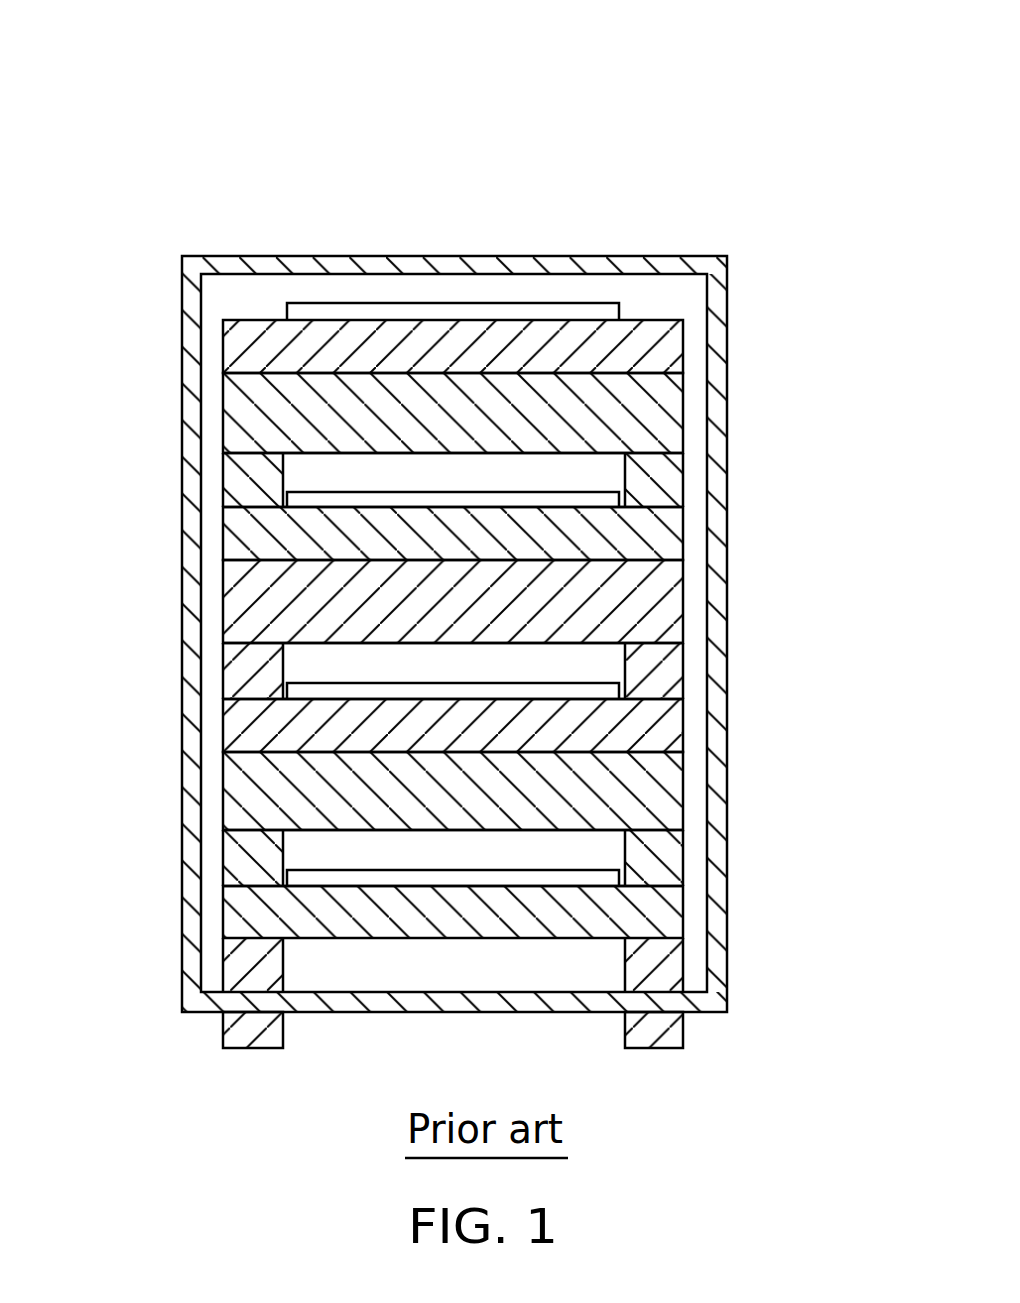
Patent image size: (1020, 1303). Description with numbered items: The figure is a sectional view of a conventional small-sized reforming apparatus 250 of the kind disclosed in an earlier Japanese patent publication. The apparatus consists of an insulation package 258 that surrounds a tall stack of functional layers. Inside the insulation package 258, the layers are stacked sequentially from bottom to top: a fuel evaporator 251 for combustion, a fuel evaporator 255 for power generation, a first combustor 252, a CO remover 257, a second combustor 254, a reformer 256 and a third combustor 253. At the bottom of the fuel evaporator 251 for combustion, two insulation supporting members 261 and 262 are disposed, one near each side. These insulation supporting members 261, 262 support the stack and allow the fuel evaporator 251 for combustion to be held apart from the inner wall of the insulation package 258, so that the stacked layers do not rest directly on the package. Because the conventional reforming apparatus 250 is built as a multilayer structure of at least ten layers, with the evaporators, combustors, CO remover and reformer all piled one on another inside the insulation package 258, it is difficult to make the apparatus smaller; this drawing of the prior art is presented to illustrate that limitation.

The small-sized reforming apparatus 250 is at (576, 206).
The fuel evaporator for combustion 251 is at (245, 907).
The first combustor 252 is at (250, 728).
The third combustor 253 is at (237, 345).
The second combustor 254 is at (240, 532).
The fuel evaporator for power generation 255 is at (245, 800).
The reformer 256 is at (237, 417).
The CO remover 257 is at (240, 605).
The insulation package 258 is at (717, 297).
The insulation supporting member 261 is at (242, 968).
The insulation supporting member 262 is at (667, 965).